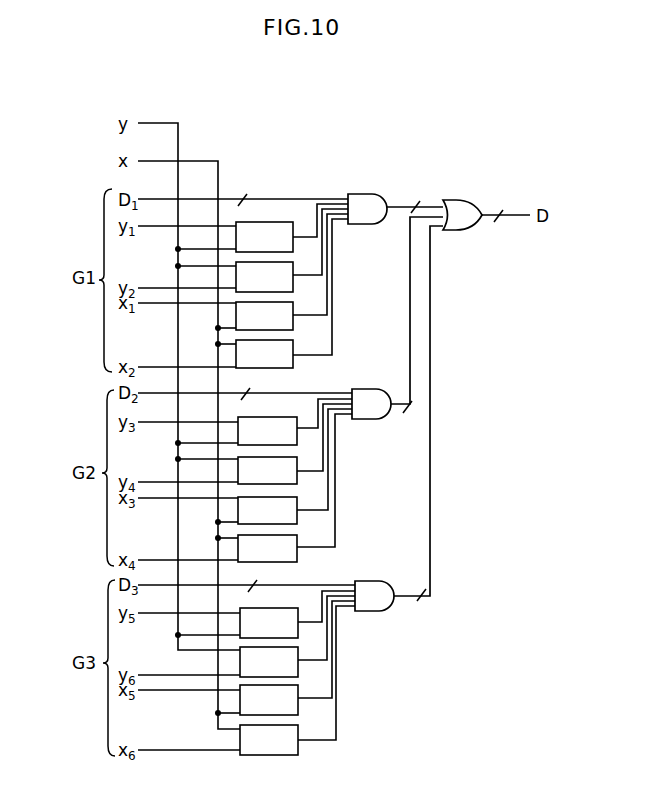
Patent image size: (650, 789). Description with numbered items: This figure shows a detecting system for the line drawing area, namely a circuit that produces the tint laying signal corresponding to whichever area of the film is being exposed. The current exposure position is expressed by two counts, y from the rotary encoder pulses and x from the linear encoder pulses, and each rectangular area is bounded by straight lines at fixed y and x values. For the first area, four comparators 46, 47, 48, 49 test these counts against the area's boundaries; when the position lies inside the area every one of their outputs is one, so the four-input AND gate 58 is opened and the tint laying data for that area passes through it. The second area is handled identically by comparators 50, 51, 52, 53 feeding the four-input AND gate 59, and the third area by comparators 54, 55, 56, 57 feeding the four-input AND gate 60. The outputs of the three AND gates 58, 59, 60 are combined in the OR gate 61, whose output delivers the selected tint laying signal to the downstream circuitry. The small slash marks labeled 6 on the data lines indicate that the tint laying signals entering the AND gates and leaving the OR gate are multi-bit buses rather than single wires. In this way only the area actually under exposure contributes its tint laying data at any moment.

The six-bit bus 6 is at (373, 391).
The comparator 46 is at (282, 222).
The comparator 47 is at (287, 262).
The comparator 48 is at (290, 308).
The comparator 49 is at (294, 349).
The comparator 50 is at (286, 417).
The comparator 51 is at (290, 457).
The comparator 52 is at (297, 502).
The comparator 53 is at (299, 540).
The comparator 54 is at (306, 609).
The comparator 55 is at (307, 648).
The comparator 56 is at (300, 692).
The comparator 57 is at (301, 731).
The AND gate 58 is at (370, 193).
The AND gate 59 is at (374, 390).
The AND gate 60 is at (375, 581).
The OR gate 61 is at (466, 200).